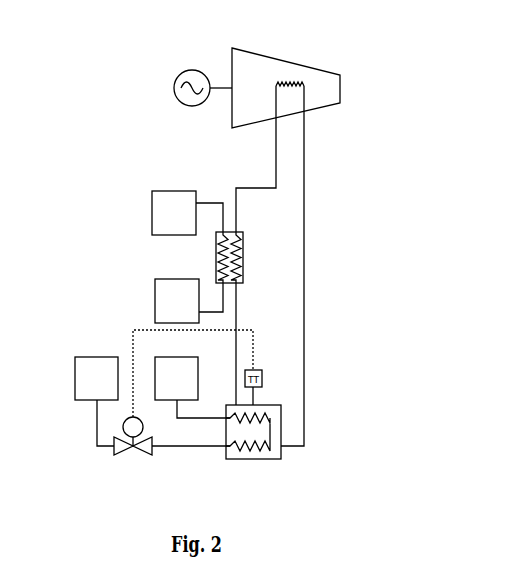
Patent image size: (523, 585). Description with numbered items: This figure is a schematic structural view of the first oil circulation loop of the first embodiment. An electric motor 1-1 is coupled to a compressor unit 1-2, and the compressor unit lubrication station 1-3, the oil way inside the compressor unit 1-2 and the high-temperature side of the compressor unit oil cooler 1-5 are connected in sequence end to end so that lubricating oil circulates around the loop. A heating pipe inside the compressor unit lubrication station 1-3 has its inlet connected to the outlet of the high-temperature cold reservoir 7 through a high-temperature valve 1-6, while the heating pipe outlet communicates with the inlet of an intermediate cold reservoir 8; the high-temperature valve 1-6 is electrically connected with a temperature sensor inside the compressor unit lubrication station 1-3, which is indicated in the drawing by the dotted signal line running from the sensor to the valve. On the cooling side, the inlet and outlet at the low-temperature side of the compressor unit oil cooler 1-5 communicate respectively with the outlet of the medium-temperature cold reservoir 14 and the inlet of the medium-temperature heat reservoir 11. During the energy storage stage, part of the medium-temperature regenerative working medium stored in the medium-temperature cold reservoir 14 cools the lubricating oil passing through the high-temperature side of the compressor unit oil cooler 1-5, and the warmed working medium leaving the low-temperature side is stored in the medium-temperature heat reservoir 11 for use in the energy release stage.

The electric motor 1-1 is at (178, 69).
The compressor unit 1-2 is at (283, 62).
The compressor unit lubrication station 1-3 is at (248, 461).
The compressor unit oil cooler 1-5 is at (243, 257).
The high-temperature valve 1-6 is at (135, 455).
The high-temperature cold reservoir 7 is at (75, 377).
The intermediate cold reservoir 8 is at (198, 373).
The medium-temperature heat reservoir 11 is at (152, 213).
The medium-temperature cold reservoir 14 is at (155, 302).